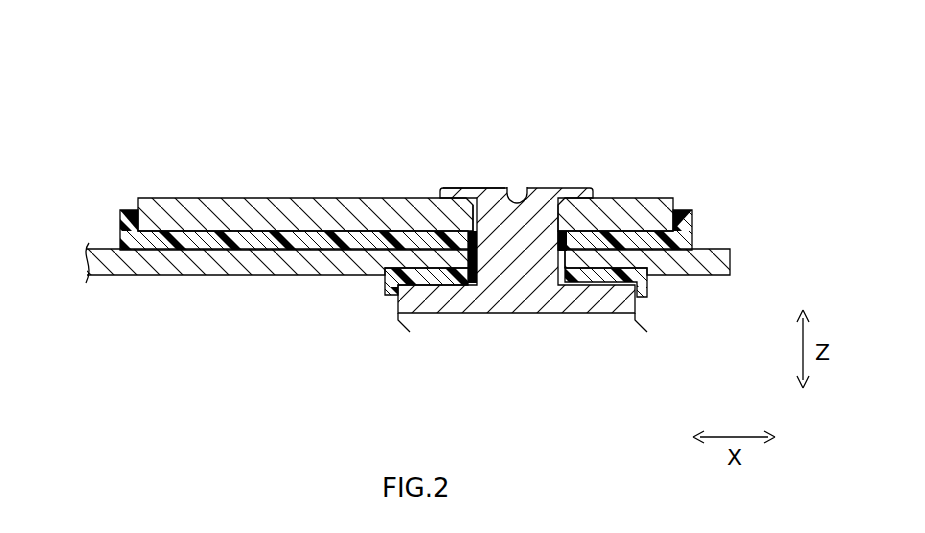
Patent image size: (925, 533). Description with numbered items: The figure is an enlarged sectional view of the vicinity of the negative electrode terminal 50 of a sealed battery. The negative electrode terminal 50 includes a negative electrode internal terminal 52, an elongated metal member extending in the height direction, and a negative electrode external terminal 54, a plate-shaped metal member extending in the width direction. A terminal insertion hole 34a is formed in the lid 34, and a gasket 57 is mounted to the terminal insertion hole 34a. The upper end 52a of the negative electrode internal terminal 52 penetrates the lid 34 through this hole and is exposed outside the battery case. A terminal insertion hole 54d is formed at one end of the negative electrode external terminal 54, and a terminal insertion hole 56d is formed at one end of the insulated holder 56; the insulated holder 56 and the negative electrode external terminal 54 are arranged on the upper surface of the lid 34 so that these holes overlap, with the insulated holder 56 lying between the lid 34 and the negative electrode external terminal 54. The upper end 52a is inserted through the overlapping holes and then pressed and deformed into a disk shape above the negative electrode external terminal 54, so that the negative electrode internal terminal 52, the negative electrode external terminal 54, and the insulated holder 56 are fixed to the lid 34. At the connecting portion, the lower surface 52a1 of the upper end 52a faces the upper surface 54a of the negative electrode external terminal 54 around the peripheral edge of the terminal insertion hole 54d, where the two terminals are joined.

The negative electrode terminal 50 is at (658, 95).
The negative electrode internal terminal 52 is at (405, 300).
The upper end of negative electrode internal terminal 52a is at (532, 190).
The lower surface of upper end 52a1 is at (423, 197).
The negative electrode external terminal 54 is at (252, 202).
The upper surface of negative electrode external terminal 54a is at (452, 200).
The terminal insertion hole 54d is at (553, 210).
The insulated holder 56 is at (688, 212).
The terminal insertion hole 56d is at (553, 240).
The lid 34 is at (722, 250).
The terminal insertion hole 34a is at (557, 268).
The gasket 57 is at (648, 287).